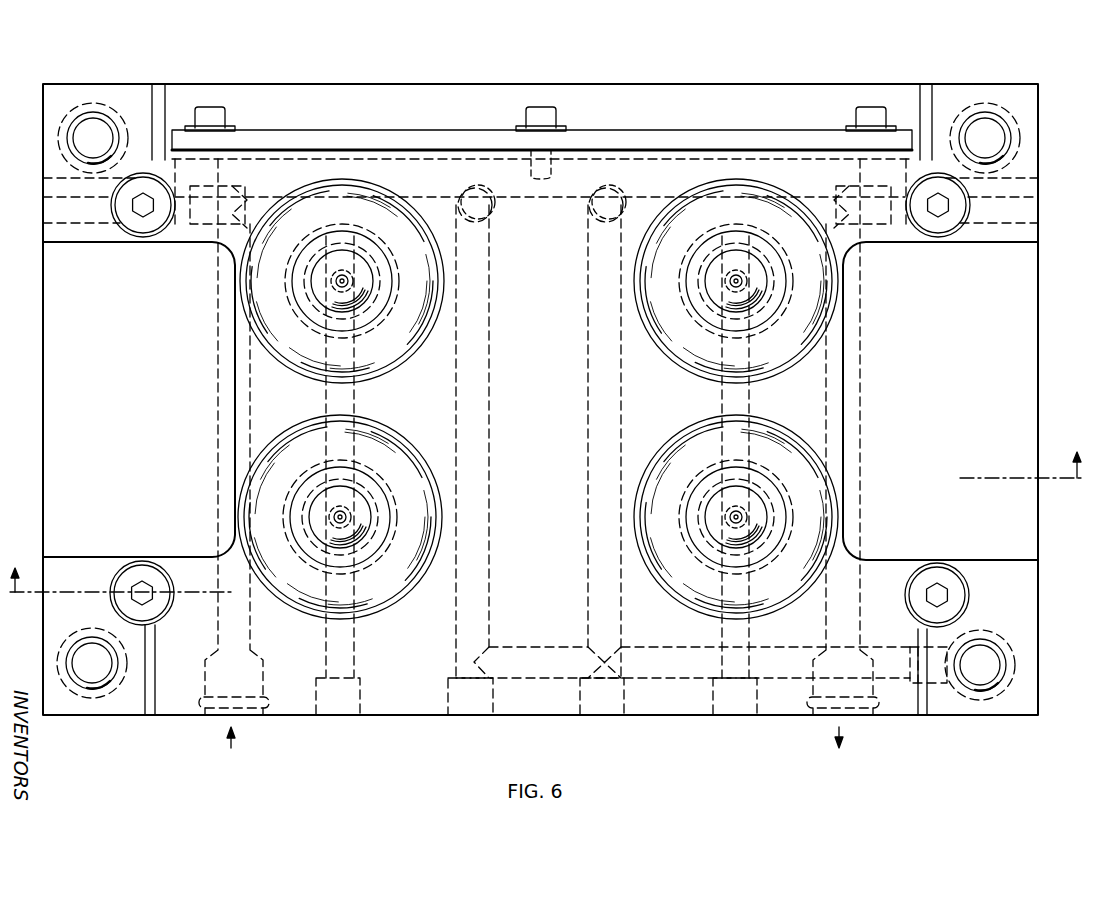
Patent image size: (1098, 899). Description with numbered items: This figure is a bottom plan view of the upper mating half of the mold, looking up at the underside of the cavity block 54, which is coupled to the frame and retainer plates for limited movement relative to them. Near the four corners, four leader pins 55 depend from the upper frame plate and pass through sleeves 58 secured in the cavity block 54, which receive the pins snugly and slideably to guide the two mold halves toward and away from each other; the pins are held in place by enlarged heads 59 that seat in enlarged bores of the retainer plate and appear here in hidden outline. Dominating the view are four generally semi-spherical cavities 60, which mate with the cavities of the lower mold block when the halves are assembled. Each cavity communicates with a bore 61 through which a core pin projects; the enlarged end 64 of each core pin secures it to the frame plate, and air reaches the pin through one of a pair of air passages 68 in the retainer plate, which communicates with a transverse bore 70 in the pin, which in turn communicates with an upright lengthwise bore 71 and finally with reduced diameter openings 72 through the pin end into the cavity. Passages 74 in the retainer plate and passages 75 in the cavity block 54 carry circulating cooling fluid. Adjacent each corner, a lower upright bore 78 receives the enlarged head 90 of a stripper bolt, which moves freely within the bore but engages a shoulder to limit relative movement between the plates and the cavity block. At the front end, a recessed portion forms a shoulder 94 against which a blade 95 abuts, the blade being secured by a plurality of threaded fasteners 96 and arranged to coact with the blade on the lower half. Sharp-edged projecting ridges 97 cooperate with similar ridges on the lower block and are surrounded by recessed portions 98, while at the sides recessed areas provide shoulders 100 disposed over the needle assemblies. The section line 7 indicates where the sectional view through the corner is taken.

The section line 7- 7 is at (545, 510).
The cavity block 54 is at (523, 715).
The leader pins 55 is at (97, 120).
The sleeves 58 is at (70, 128).
The enlarged heads 59 is at (60, 140).
The semi-spherical cavities 60 is at (288, 345).
The bores 61 is at (372, 288).
The enlarged ends 64 is at (293, 294).
The air passages 68 is at (354, 634).
The transverse bores 70 is at (318, 262).
The lengthwise bore 71 is at (380, 270).
The reduced diameter openings 72 is at (342, 281).
The passages 74 is at (262, 192).
The passages 75 is at (250, 632).
The upright bore 78 is at (132, 230).
The enlarged head 90 is at (148, 232).
The shoulder 94 is at (470, 84).
The blade 95 is at (684, 130).
The threaded fasteners 96 is at (228, 112).
The sharp-edged projecting ridges 97 is at (397, 430).
The recessed portions 98 is at (524, 426).
The shoulders 100 is at (42, 355).